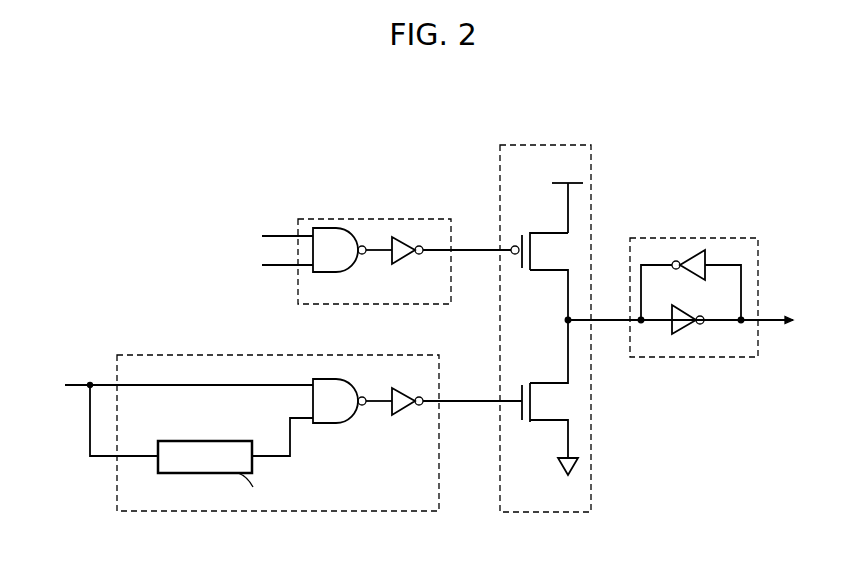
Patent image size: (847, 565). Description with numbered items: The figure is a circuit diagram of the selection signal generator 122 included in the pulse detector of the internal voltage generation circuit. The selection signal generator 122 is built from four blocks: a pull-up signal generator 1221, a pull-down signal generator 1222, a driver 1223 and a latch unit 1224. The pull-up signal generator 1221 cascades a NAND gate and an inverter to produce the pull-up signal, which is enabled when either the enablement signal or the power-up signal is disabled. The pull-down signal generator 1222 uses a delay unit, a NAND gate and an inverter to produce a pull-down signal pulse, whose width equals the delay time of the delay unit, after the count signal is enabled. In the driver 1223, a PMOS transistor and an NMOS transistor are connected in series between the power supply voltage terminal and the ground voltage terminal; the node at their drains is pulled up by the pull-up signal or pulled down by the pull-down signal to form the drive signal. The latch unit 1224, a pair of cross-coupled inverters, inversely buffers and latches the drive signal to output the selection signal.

The selection signal generator 122 is at (103, 148).
The pull-up signal generator 1221 is at (418, 219).
The pull-down signal generator 1222 is at (397, 355).
The driver 1223 is at (592, 162).
The latch unit 1224 is at (738, 238).